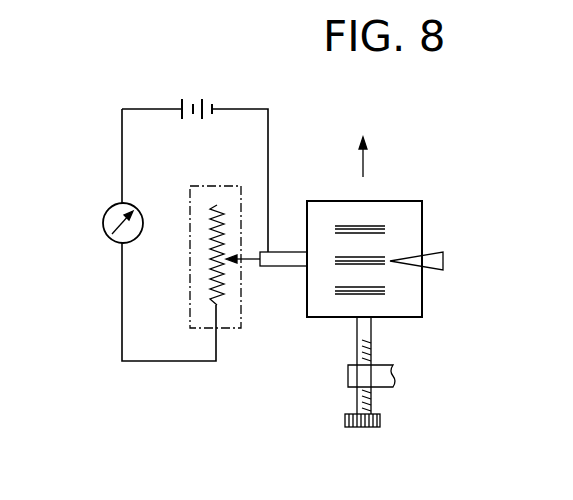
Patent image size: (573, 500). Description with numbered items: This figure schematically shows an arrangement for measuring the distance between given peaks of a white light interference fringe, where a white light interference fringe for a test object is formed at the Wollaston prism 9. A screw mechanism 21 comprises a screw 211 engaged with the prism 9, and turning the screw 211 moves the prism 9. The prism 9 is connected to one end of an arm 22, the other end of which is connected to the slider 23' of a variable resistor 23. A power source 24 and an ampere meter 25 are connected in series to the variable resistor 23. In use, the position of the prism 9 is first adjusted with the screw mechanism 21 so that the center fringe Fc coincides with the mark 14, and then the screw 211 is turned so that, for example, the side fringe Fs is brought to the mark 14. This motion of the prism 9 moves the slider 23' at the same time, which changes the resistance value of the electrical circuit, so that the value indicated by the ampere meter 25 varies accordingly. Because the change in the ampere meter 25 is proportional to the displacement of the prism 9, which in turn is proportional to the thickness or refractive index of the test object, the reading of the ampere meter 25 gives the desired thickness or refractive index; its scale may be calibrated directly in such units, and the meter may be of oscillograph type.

The Wollaston prism 9 is at (400, 208).
The mark 14 is at (446, 258).
The screw mechanism 21 is at (385, 395).
The screw 211 is at (362, 428).
The arm 22 is at (286, 251).
The variable resistor 23 is at (220, 283).
The slider contact 23' is at (253, 282).
The power source 24 is at (203, 87).
The ampere meter 25 is at (103, 223).